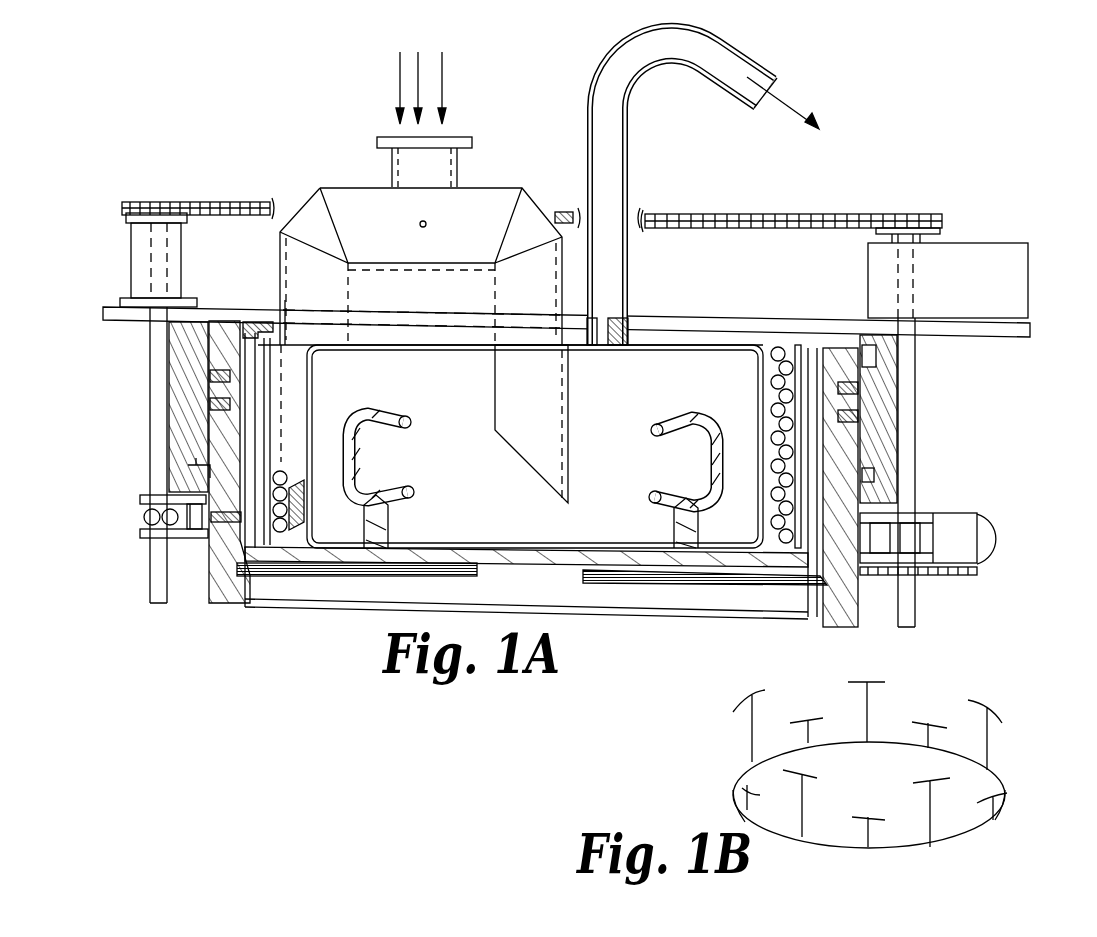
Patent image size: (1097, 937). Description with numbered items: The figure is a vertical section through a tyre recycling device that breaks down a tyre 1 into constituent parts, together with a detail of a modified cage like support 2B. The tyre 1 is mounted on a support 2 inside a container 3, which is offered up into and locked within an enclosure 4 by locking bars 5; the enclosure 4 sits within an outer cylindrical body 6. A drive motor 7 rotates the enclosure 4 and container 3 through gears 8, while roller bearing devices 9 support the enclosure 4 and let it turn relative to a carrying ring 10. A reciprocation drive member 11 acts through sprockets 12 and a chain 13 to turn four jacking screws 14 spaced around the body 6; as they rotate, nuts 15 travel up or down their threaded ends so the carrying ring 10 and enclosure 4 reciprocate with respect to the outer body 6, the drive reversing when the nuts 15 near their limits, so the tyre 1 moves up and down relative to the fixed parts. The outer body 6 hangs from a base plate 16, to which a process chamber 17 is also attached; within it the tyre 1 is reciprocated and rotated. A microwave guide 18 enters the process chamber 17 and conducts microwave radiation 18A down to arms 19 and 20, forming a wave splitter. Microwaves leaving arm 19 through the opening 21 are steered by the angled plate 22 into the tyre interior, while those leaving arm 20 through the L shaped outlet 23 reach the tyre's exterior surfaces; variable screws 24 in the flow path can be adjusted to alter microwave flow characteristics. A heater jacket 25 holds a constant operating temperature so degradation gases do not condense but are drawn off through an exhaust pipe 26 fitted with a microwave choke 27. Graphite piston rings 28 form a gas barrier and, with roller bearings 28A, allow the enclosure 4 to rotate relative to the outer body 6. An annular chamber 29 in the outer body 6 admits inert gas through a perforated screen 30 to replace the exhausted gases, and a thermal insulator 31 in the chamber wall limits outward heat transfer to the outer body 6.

In FIG. 1A, the tyre 1 is at (400, 436).
In FIG. 1A, the support 2 is at (385, 530).
In FIG. 1B, the cage like support 2B is at (1008, 800).
In FIG. 1A, the container 3 is at (786, 545).
In FIG. 1A, the enclosure 4 is at (230, 446).
In FIG. 1A, the locking bars 5 is at (658, 586).
In FIG. 1A, the outer cylindrical body 6 is at (186, 368).
In FIG. 1A, the drive motor 7 is at (960, 536).
In FIG. 1A, the gears 8 is at (925, 578).
In FIG. 1A, the roller bearing devices 9 is at (195, 535).
In FIG. 1A, the carrying ring 10 is at (140, 500).
In FIG. 1A, the reciprocation drive member 11 is at (998, 262).
In FIG. 1A, the sprockets 12 is at (155, 210).
In FIG. 1A, the chain 13 is at (244, 200).
In FIG. 1A, the jacking screws 14 is at (906, 352).
In FIG. 1A, the nuts 15 is at (143, 520).
In FIG. 1A, the base plate 16 is at (698, 312).
In FIG. 1A, the process chamber 17 is at (453, 355).
In FIG. 1A, the microwave guide 18 is at (350, 186).
In FIG. 1A, the microwave radiation 18A is at (398, 76).
In FIG. 1A, the arm 19 is at (540, 396).
In FIG. 1A, the arm 20 is at (296, 364).
In FIG. 1A, the opening 21 is at (570, 464).
In FIG. 1A, the angled plate 22 is at (527, 470).
In FIG. 1A, the L shaped outlet 23 is at (314, 392).
In FIG. 1A, the variable screws 24 is at (426, 222).
In FIG. 1A, the heater jacket 25 is at (768, 345).
In FIG. 1A, the exhaust pipe 26 is at (618, 56).
In FIG. 1A, the microwave choke 27 is at (614, 330).
In FIG. 1A, the graphite piston rings 28 is at (215, 404).
In FIG. 1A, the roller bearings 28A is at (870, 482).
In FIG. 1A, the annular chamber 29 is at (900, 388).
In FIG. 1A, the perforated screen 30 is at (848, 342).
In FIG. 1A, the thermal insulator 31 is at (784, 342).